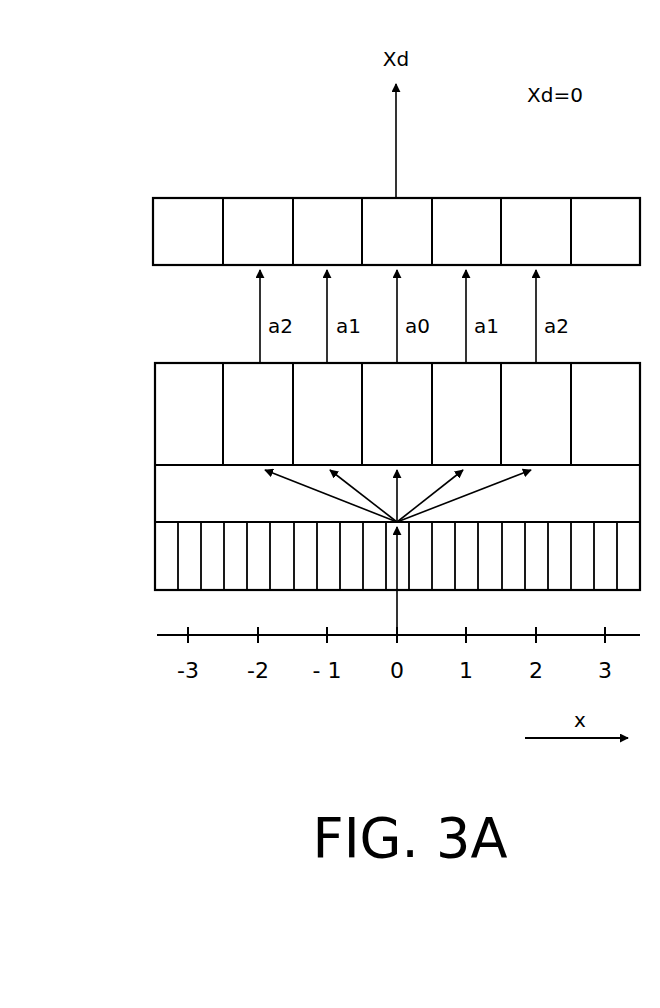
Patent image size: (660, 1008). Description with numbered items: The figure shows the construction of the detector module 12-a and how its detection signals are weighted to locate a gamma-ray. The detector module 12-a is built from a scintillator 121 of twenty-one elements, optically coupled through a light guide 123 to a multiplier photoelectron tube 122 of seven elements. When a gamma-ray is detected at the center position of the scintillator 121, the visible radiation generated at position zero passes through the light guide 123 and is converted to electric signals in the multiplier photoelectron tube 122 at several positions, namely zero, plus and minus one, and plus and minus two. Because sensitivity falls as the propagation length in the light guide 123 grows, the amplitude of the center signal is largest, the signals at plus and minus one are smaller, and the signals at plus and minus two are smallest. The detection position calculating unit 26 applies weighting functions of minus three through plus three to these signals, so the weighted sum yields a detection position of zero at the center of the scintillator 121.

The detection position calculating unit 26 is at (153, 200).
The detector module 12-a is at (100, 370).
The multiplier photoelectron tube 122 is at (155, 410).
The light guide 123 is at (155, 495).
The scintillator 121 is at (155, 563).